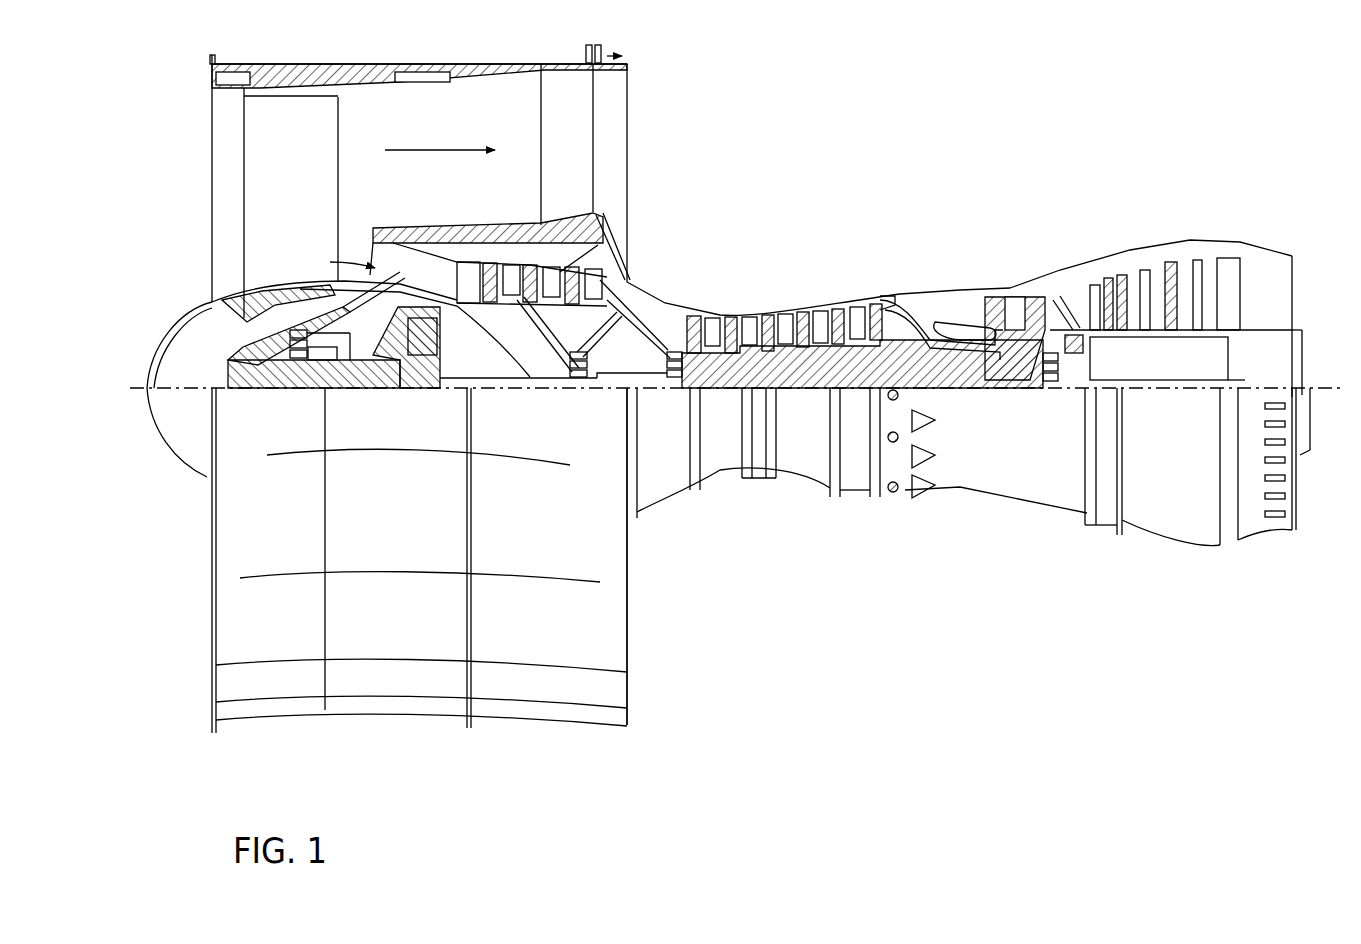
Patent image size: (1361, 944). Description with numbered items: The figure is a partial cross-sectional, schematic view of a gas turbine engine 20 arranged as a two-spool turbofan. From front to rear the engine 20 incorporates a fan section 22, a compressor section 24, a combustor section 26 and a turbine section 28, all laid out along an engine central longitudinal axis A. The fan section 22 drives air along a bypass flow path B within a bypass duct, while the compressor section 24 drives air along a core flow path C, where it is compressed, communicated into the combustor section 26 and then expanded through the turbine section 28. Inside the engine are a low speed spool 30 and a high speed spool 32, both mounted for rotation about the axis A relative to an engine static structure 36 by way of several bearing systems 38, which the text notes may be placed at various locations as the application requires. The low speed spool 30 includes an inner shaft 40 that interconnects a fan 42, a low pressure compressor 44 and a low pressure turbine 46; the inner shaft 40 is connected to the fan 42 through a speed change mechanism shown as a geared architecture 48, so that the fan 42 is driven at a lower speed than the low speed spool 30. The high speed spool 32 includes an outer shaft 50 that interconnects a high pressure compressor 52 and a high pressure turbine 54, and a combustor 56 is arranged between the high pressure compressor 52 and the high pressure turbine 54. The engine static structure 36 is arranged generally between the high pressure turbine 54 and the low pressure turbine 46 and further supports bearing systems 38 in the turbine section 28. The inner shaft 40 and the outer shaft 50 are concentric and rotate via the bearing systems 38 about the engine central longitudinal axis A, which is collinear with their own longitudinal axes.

The gas turbine engine 20 is at (1135, 96).
The fan section 22 is at (335, 56).
The compressor section 24 is at (796, 264).
The combustor section 26 is at (942, 266).
The turbine section 28 is at (1075, 216).
The low speed spool 30 is at (830, 396).
The high speed spool 32 is at (896, 296).
The engine static structure 36 is at (862, 498).
The bearing systems 38 is at (288, 388).
The inner shaft 40 is at (645, 393).
The fan 42 is at (313, 175).
The low pressure compressor 44 is at (603, 233).
The low pressure turbine 46 is at (1160, 262).
The geared architecture 48 is at (410, 390).
The outer shaft 50 is at (976, 390).
The high pressure compressor 52 is at (762, 314).
The high pressure turbine 54 is at (1015, 296).
The combustor 56 is at (955, 300).
The engine central longitudinal axis A is at (1312, 385).
The bypass flow path B is at (440, 150).
The core flow path C is at (330, 262).